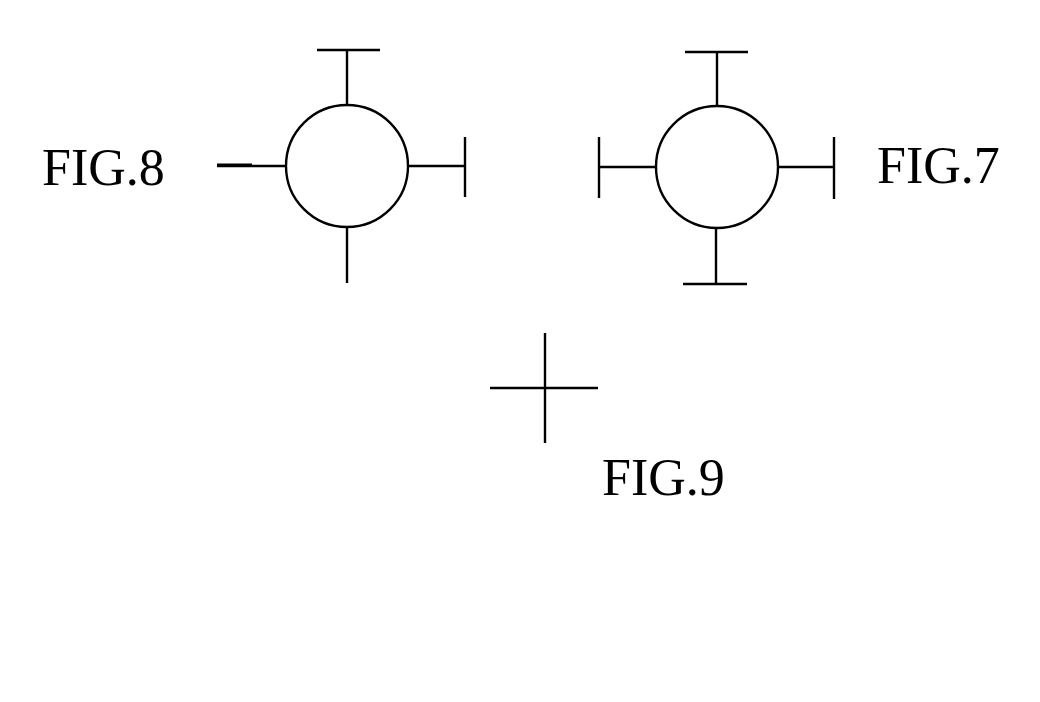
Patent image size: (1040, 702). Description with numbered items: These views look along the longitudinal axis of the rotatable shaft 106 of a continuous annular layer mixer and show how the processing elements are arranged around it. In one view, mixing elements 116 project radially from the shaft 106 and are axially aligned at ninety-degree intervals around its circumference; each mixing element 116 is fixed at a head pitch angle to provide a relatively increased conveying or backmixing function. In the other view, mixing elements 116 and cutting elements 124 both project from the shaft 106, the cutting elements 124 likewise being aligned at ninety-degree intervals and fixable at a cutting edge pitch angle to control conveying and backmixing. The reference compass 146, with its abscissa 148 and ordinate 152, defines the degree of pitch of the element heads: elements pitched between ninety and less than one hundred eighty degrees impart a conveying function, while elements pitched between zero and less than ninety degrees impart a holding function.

In FIG. 8, the shaft 106 is at (393, 210).
In FIG. 7, the shaft 106 is at (753, 113).
In FIG. 8, the mixing element 116 is at (437, 166).
In FIG. 7, the mixing element 116 is at (717, 79).
In FIG. 8, the cutting element 124 is at (347, 253).
In FIG. 9, the compass 146 is at (569, 390).
In FIG. 9, the abscissa 148 is at (508, 388).
In FIG. 9, the ordinate 152 is at (545, 372).